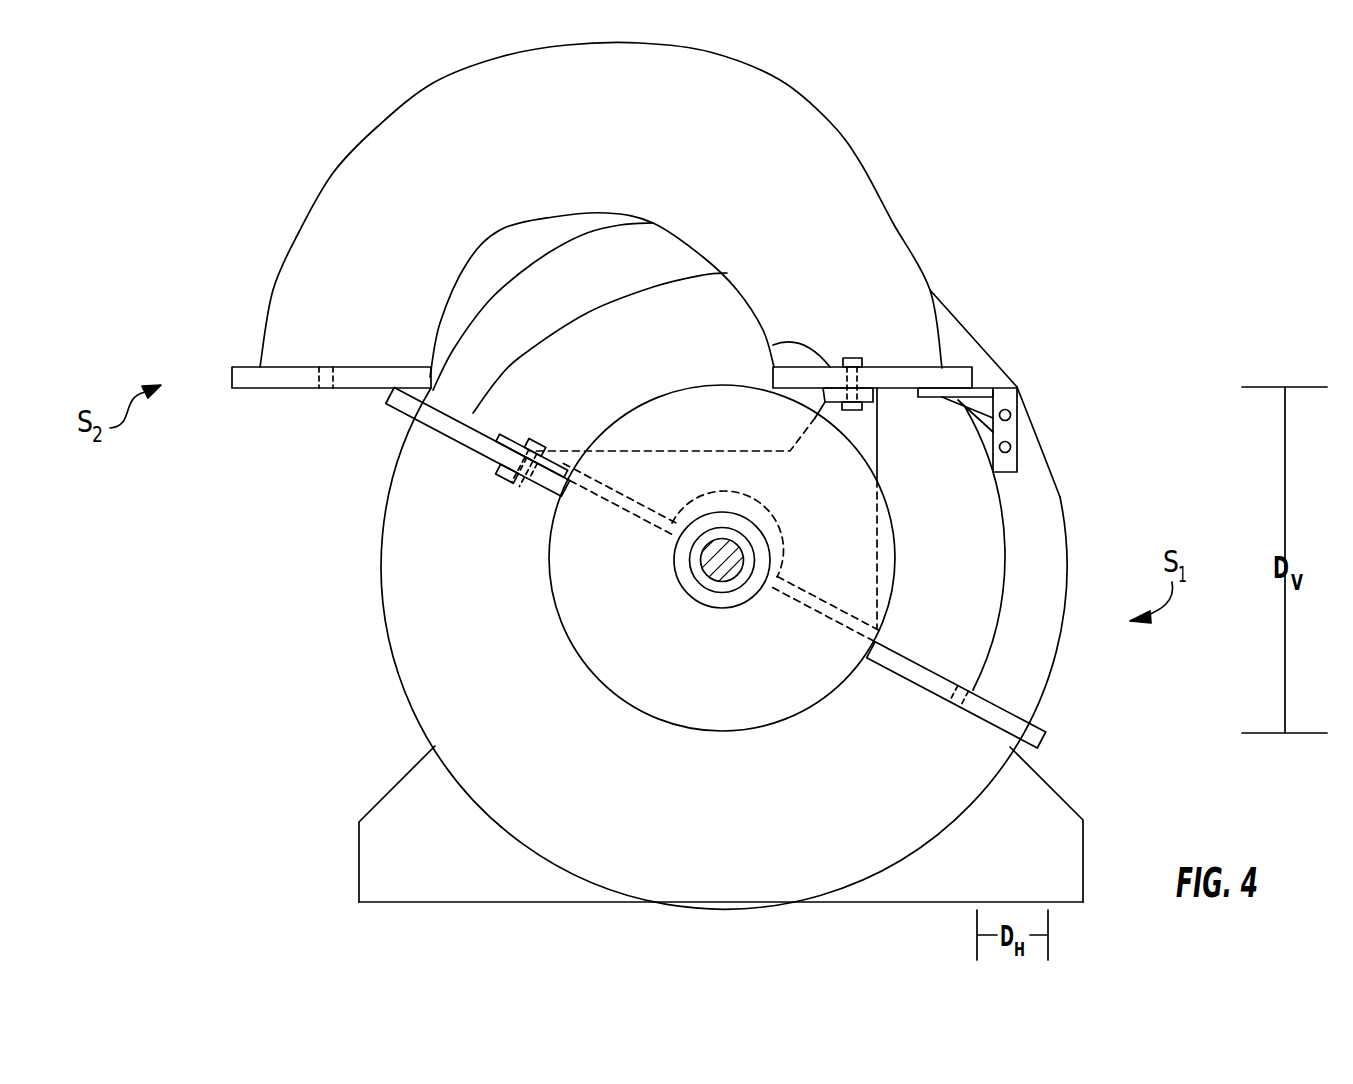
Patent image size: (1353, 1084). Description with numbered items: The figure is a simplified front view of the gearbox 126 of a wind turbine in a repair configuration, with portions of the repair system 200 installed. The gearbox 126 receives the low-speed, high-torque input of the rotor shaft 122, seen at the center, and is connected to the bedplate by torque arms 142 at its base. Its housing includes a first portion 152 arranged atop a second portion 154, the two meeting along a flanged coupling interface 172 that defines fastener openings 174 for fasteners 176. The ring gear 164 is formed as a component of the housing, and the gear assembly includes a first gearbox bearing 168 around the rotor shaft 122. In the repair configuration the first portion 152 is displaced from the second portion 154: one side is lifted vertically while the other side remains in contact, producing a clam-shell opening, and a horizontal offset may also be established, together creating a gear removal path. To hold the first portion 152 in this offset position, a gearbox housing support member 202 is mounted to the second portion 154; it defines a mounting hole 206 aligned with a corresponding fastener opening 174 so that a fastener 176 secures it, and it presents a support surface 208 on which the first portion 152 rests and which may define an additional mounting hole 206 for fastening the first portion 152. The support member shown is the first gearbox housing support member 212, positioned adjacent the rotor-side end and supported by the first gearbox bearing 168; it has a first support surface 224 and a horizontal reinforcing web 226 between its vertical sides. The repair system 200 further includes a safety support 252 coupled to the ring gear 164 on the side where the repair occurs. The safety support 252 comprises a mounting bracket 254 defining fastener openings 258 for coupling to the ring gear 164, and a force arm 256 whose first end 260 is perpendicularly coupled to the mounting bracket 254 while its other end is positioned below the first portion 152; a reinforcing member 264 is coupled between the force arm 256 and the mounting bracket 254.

The repair system 200 is at (1066, 172).
The first portion 152 is at (305, 312).
The ring gear 164 is at (1043, 600).
The gearbox 126 is at (270, 582).
The first gearbox bearing 168 is at (677, 560).
The rotor shaft 122 is at (722, 568).
The coupling interface 172 is at (270, 400).
The fastener openings 174 is at (326, 390).
The fasteners 176 is at (505, 482).
The mounting hole 206 is at (497, 430).
The support surface 208 is at (746, 342).
The first support surface 224 is at (775, 341).
The gearbox housing support member 202 is at (865, 433).
The first gearbox housing support member 212 is at (932, 387).
The horizontal reinforcing web 226 is at (878, 477).
The reinforcing member 264 is at (962, 387).
The force arm 256 is at (978, 387).
The first end 260 is at (987, 387).
The safety support 252 is at (1024, 391).
The fastener openings 258 is at (1012, 447).
The mounting bracket 254 is at (1014, 458).
The torque arms 142 is at (400, 832).
The second portion 154 is at (727, 883).